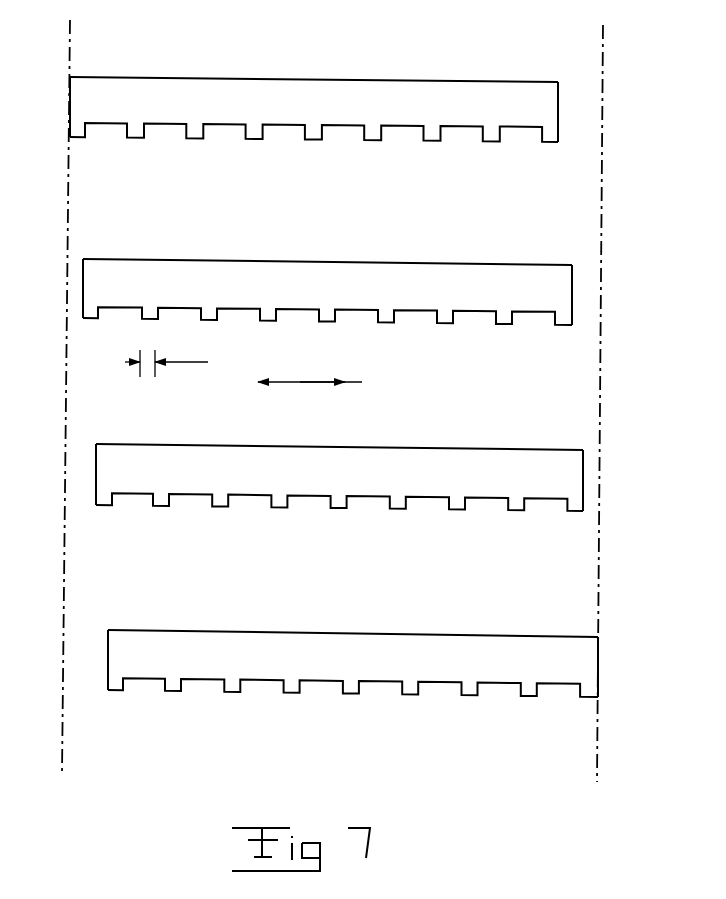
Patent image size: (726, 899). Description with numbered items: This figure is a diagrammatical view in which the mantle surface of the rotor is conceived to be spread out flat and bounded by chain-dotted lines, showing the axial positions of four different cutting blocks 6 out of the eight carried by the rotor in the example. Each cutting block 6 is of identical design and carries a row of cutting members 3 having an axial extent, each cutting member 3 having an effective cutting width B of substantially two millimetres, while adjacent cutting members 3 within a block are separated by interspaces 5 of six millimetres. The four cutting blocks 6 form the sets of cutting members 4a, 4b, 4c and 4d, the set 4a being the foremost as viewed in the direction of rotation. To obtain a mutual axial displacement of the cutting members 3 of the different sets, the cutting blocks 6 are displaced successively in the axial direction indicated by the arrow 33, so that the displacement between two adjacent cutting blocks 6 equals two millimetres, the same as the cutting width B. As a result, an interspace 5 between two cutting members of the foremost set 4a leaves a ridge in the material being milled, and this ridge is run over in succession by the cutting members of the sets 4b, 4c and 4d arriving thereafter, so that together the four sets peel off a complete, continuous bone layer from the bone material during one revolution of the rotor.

The cutting member 3 is at (197, 127).
The interspace 5 is at (223, 132).
The cutting block 6 is at (392, 97).
The foremost set of cutting members 4a is at (605, 667).
The second set of cutting members 4b is at (608, 479).
The third set of cutting members 4c is at (582, 287).
The fourth set of cutting members 4d is at (577, 108).
The effective cutting width B is at (166, 357).
The arrow indicating axial displacement 33 is at (310, 383).